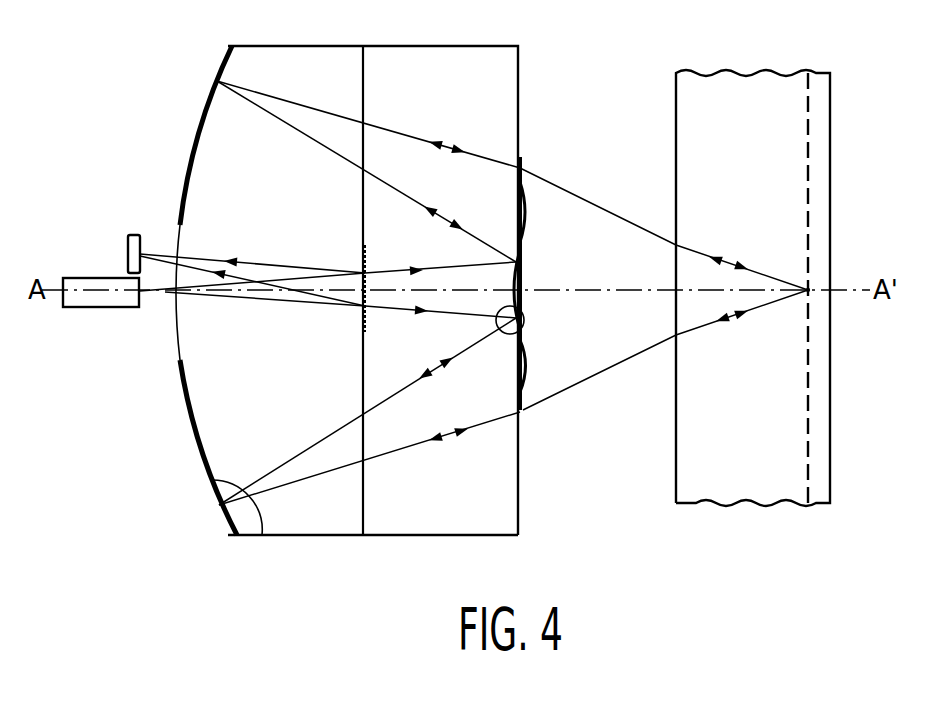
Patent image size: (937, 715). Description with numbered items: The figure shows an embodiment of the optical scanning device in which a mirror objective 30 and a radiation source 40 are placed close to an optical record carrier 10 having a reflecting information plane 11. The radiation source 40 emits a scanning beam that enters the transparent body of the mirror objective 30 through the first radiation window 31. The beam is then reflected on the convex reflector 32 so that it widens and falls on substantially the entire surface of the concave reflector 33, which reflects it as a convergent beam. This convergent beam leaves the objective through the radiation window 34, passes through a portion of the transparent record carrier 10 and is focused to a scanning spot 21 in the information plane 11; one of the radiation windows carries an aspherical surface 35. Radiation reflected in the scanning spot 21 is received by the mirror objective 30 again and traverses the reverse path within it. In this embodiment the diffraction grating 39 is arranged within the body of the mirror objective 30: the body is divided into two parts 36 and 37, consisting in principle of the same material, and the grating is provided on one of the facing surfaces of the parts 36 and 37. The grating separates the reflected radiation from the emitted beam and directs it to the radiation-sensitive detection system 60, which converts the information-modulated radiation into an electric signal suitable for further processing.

The optical record carrier 10 is at (753, 488).
The information plane 11 is at (811, 350).
The scanning spot 21 is at (806, 289).
The mirror objective 30 is at (530, 69).
The first radiation window 31 is at (176, 320).
The convex reflector 32 is at (523, 342).
The concave reflector 33 is at (262, 537).
The radiation window 34 is at (523, 208).
The aspherical surface 35 is at (525, 217).
The first part of objective body 36 is at (322, 520).
The second part of objective body 37 is at (418, 515).
The diffraction grating 39 is at (367, 249).
The radiation source 40 is at (105, 307).
The radiation-sensitive detection system 60 is at (128, 255).